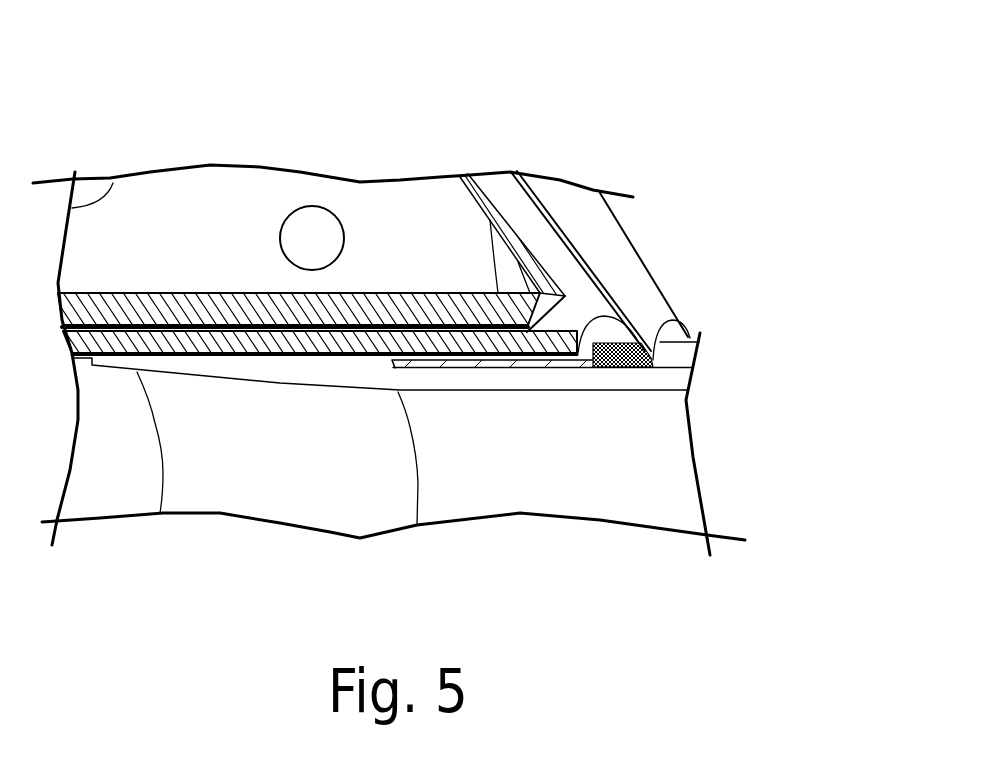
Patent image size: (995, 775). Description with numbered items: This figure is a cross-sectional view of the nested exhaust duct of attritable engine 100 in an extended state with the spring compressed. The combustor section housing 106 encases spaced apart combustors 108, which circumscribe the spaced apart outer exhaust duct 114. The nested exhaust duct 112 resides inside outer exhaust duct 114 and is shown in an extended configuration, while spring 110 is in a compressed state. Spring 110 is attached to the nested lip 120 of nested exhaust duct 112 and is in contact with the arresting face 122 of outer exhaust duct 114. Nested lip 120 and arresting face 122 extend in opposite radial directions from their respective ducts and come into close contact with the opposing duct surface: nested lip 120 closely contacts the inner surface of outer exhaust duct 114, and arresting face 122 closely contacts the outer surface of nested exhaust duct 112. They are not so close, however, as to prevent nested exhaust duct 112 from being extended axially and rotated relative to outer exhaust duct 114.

The attritable engine 100 is at (702, 122).
The combustor section housing 106 is at (633, 242).
The combustor 108 is at (441, 232).
The spring 110 is at (484, 368).
The nested exhaust duct 112 is at (257, 460).
The outer exhaust duct 114 is at (132, 467).
The nested lip 120 is at (392, 360).
The arresting face 122 is at (630, 368).